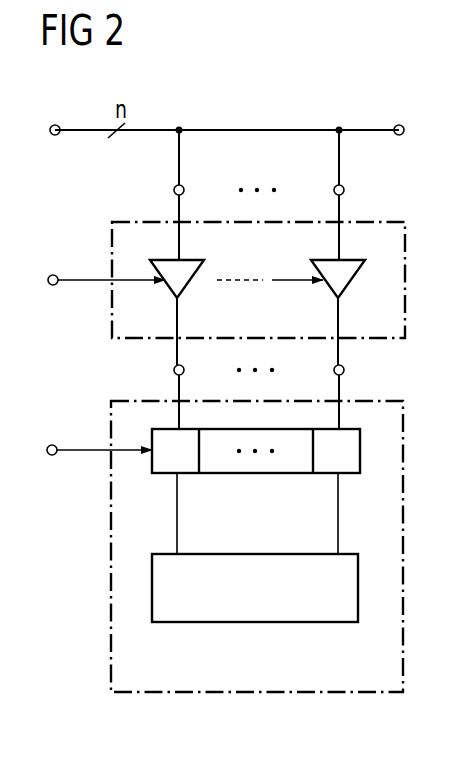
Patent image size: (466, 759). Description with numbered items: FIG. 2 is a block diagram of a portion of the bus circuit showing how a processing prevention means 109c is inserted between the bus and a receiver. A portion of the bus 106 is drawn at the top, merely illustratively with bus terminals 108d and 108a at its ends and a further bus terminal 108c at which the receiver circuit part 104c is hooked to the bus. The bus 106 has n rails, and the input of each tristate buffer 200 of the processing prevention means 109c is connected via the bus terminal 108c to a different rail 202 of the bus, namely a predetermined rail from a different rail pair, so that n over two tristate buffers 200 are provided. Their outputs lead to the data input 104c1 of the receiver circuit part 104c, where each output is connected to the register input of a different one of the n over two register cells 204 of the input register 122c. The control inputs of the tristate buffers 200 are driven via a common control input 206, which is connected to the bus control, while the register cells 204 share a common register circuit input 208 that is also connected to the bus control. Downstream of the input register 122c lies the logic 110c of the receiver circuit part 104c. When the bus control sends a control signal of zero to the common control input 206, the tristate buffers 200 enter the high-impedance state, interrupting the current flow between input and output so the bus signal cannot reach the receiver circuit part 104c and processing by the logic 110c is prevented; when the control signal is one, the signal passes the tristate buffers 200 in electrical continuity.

The bus 106 is at (258, 127).
The bus terminal 108d is at (56, 124).
The bus terminal 108a is at (398, 124).
The bus terminal 108c is at (172, 190).
The rail 202 is at (341, 170).
The processing prevention means 109c is at (112, 312).
The tristate buffer 200 is at (352, 285).
The common control input 206 is at (54, 275).
The data input 104c1 is at (172, 370).
The control input of register 208 is at (53, 445).
The receiver circuit part 104c is at (111, 553).
The register cell 204 is at (165, 466).
The register 122c is at (242, 488).
The logic 110c is at (256, 624).